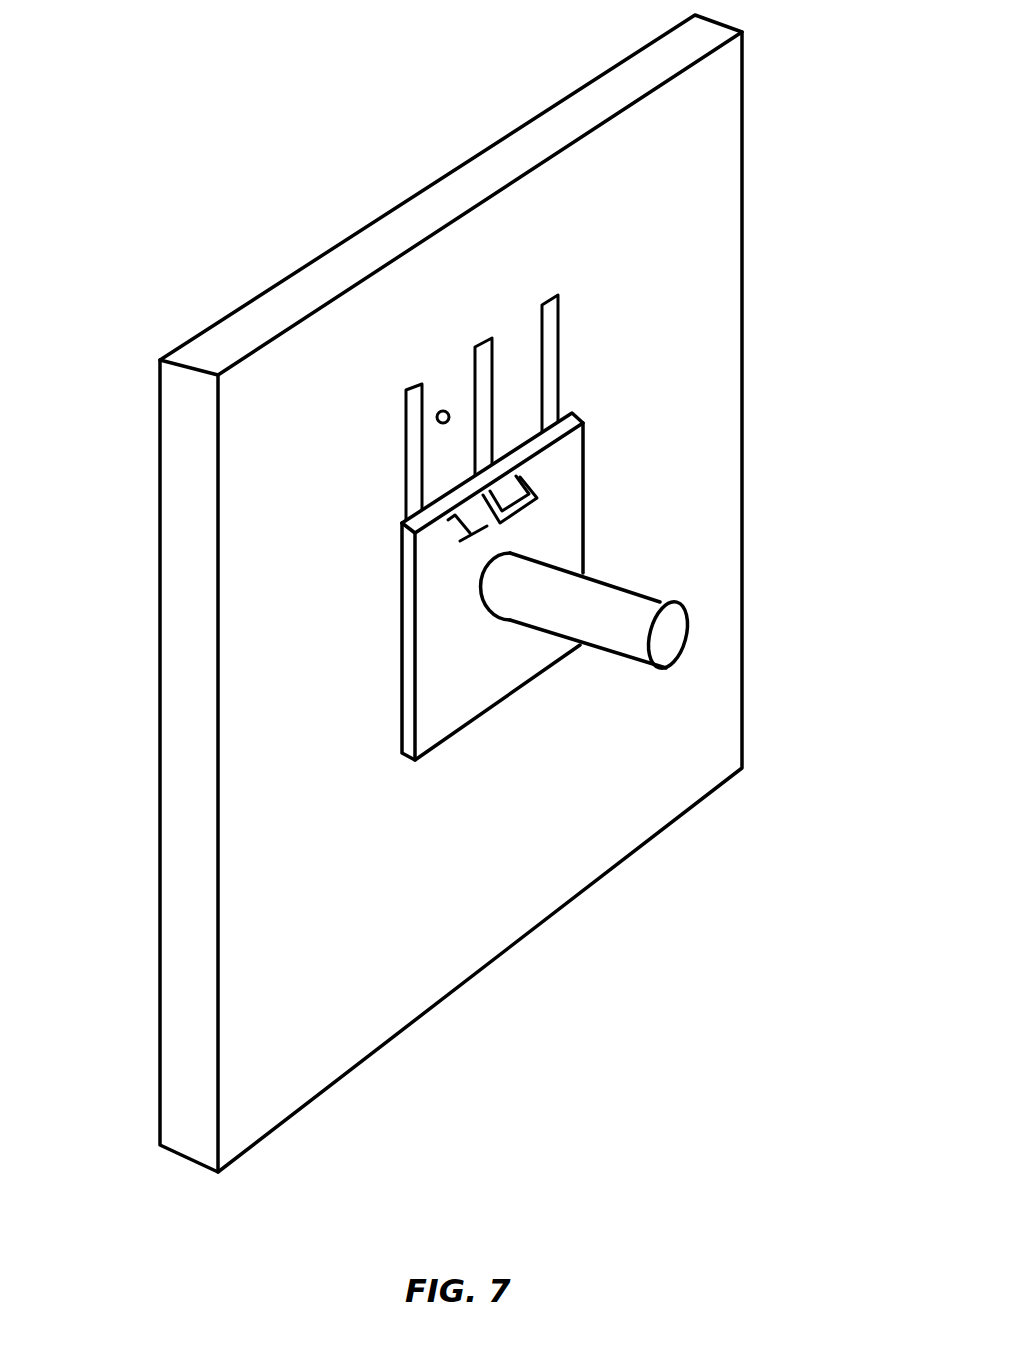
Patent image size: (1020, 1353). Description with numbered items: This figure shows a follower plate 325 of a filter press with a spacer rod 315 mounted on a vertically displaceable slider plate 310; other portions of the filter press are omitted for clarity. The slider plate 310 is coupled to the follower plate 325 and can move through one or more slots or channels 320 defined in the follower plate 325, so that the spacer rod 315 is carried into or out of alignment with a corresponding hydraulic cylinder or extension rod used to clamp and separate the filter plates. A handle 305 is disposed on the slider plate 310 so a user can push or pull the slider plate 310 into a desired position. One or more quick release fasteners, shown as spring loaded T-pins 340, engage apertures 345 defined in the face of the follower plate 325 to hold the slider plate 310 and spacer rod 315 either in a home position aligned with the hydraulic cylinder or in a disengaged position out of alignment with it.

The handle 305 is at (533, 485).
The slider plate 310 is at (487, 676).
The spacer rod 315 is at (628, 597).
The slots or channels 320 is at (550, 295).
The follower plate 325 is at (628, 213).
The spring loaded T-pins 340 is at (453, 520).
The apertures 345 is at (443, 408).